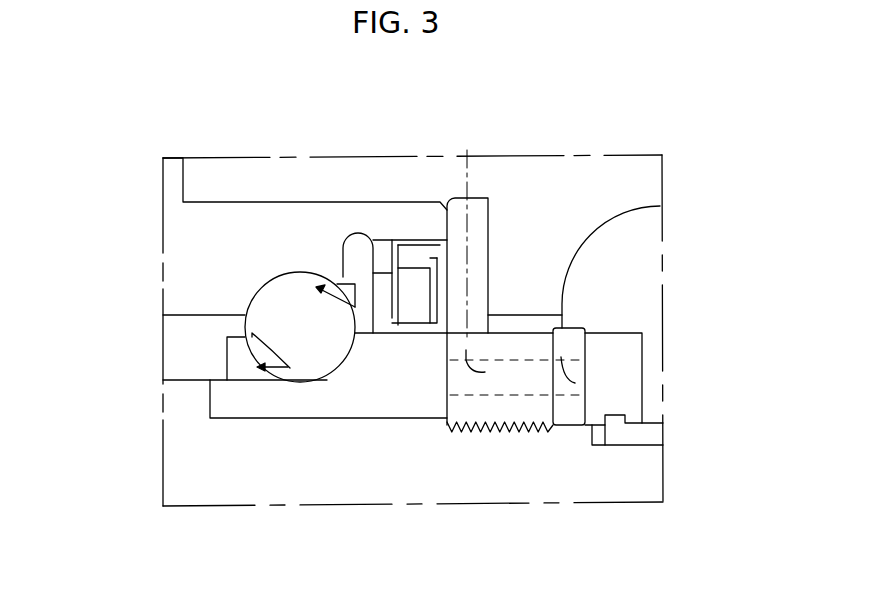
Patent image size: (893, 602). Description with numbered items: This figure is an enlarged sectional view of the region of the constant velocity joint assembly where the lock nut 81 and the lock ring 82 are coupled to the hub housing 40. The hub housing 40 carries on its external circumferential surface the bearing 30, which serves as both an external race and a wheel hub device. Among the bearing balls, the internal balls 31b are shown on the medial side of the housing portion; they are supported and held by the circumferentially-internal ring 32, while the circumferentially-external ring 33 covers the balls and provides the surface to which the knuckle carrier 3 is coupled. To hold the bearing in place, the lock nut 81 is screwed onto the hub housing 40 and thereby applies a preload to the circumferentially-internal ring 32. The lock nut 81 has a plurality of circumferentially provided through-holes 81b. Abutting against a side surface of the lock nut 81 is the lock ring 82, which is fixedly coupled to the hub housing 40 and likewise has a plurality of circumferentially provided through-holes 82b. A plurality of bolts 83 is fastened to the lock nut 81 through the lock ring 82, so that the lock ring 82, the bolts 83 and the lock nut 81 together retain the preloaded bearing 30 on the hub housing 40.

The knuckle carrier 3 is at (503, 178).
The bearing 30 is at (158, 355).
The internal balls 31b is at (295, 293).
The circumferentially-internal ring 32 is at (262, 403).
The circumferentially-external ring 33 is at (187, 252).
The hub housing 40 is at (355, 480).
The lock nut 81 is at (527, 347).
The through-holes 81b is at (467, 150).
The lock ring 82 is at (578, 335).
The through-holes 82b is at (597, 384).
The bolts 83 is at (630, 350).